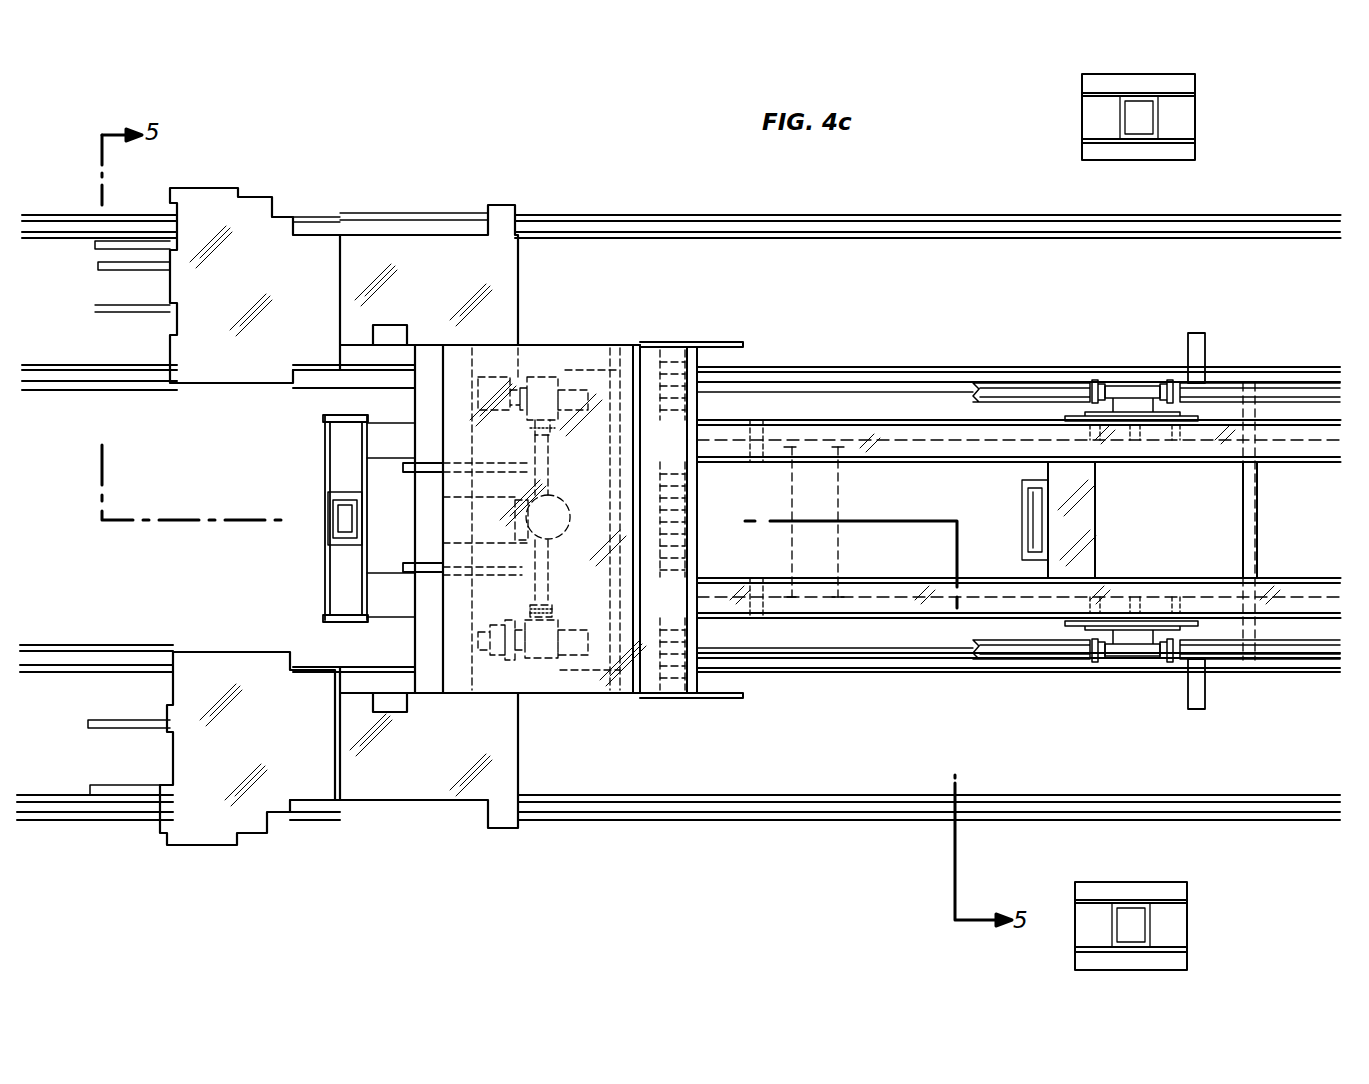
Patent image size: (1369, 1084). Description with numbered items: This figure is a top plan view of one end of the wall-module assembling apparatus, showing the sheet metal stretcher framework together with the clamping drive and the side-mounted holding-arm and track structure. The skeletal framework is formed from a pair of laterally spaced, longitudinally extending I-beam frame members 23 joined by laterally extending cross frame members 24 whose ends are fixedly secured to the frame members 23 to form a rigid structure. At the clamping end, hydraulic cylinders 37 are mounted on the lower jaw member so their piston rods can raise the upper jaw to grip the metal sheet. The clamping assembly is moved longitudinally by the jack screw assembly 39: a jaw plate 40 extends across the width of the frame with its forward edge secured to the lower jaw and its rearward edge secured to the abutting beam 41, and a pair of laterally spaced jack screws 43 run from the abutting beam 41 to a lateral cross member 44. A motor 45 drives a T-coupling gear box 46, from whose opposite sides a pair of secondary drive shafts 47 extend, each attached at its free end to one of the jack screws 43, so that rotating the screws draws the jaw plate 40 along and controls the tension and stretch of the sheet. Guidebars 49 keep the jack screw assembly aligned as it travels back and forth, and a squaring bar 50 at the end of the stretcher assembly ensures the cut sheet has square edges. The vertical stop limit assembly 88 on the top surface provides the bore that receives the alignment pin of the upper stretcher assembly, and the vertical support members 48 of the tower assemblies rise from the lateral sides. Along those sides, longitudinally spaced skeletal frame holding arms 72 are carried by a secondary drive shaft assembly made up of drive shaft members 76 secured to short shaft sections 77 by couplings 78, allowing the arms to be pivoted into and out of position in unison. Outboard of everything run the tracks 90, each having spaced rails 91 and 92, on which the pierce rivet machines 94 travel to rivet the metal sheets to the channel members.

The I-beam frame member 23 is at (404, 453).
The cross frame member 24 is at (335, 463).
The hydraulic cylinder 37 is at (700, 489).
The jack screw assembly 39 is at (538, 670).
The jaw plate 40 is at (584, 682).
The abutting beam 41 is at (422, 396).
The jack screw 43 is at (537, 382).
The lateral cross member 44 is at (576, 378).
The motor 45 is at (502, 538).
The T-coupling gear box 46 is at (558, 516).
The secondary drive shaft 47 is at (546, 448).
The vertical support member 48 is at (1160, 124).
The guidebar 49 is at (430, 546).
The squaring bar 50 is at (726, 698).
The skeletal frame holding arm 72 is at (1206, 346).
The drive shaft member 76 is at (1018, 384).
The short shaft section 77 is at (1123, 386).
The coupling 78 is at (1094, 378).
The vertical stop limit assembly 88 is at (318, 532).
The track 90 is at (912, 216).
The rail 91 is at (700, 232).
The rail 92 is at (798, 368).
The pierce rivet machine 94 is at (146, 284).